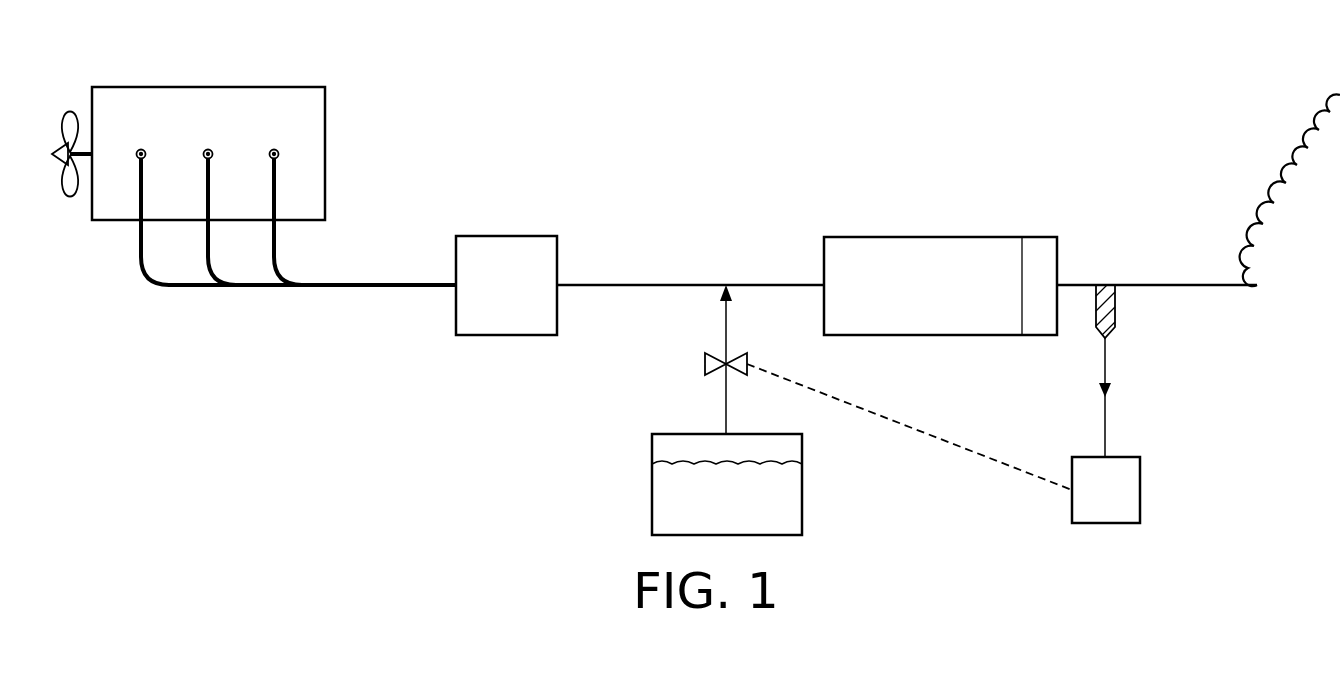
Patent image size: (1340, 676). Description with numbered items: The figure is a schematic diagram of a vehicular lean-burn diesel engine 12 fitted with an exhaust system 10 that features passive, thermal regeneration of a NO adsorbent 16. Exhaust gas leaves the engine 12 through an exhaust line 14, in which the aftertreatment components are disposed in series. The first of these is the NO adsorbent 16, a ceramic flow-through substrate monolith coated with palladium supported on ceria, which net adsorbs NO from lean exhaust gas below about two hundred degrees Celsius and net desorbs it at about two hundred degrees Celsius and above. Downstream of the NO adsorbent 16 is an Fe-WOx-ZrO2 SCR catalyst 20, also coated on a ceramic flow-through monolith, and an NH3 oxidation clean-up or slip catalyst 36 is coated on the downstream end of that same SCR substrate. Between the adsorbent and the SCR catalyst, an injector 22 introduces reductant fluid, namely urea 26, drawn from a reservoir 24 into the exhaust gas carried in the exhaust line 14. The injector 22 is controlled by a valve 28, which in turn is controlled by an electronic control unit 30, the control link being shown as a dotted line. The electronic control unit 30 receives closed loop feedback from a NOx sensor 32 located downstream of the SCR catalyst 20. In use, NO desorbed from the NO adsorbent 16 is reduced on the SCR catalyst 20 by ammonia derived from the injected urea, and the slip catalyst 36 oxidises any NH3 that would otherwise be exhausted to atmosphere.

The exhaust system 10 is at (856, 109).
The diesel engine 12 is at (188, 153).
The exhaust line 14 is at (367, 290).
The NO adsorbent 16 is at (505, 235).
The SCR catalyst 20 is at (921, 236).
The injector 22 is at (726, 283).
The reservoir 24 is at (652, 484).
The urea 26 is at (727, 485).
The valve 28 is at (705, 364).
The electronic control unit 30 is at (1106, 490).
The NOx sensor 32 is at (1103, 283).
The NH3 slip catalyst 36 is at (1036, 236).